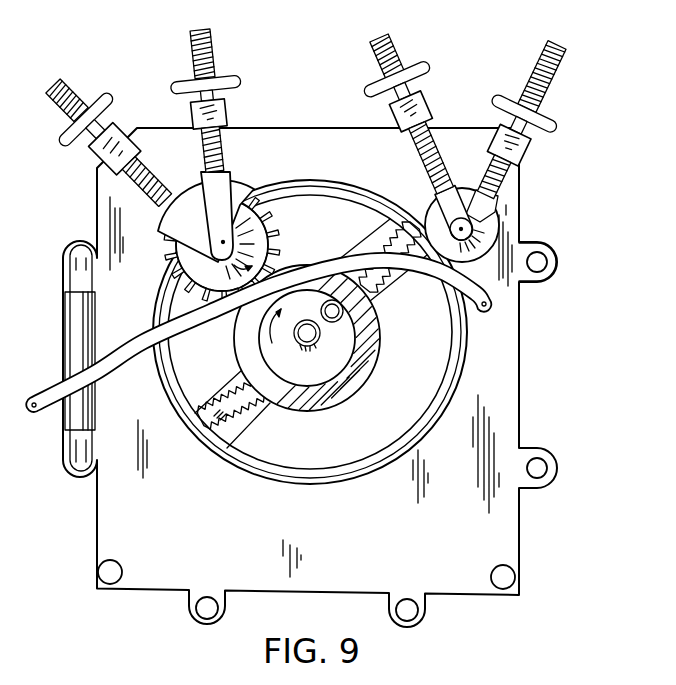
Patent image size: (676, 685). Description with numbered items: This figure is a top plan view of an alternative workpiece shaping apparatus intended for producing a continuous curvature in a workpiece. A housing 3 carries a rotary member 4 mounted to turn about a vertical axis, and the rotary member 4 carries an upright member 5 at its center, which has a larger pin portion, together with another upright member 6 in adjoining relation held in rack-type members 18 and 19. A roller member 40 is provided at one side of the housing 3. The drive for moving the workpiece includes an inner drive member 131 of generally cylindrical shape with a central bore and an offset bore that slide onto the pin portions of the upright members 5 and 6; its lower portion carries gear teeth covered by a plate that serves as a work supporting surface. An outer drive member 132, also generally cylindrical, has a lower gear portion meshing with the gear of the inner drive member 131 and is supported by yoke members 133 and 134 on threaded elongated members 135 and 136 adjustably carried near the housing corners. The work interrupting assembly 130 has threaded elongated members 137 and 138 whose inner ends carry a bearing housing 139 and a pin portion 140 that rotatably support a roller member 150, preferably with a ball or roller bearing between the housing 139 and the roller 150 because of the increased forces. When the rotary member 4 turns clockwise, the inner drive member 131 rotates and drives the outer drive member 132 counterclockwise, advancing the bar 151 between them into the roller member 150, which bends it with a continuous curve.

The housing 3 is at (509, 391).
The rotary member 4 is at (430, 357).
The upright member 5 is at (302, 338).
The upright member 6 is at (328, 310).
The rack-type member 18 is at (377, 238).
The rack-type member 19 is at (388, 284).
The roller member 40 is at (78, 340).
The work interrupting assembly 130 is at (480, 152).
The inner drive member 131 is at (332, 367).
The outer drive member 132 is at (273, 200).
The yoke member 133 is at (227, 187).
The yoke member 134 is at (172, 218).
The threaded elongated member 135 is at (230, 131).
The threaded elongated member 136 is at (154, 157).
The threaded elongated member 137 is at (518, 175).
The threaded elongated member 138 is at (448, 147).
The bearing housing portion 139 is at (488, 212).
The pin portion 140 is at (437, 200).
The roller member 150 is at (536, 241).
The bar 151 is at (134, 364).